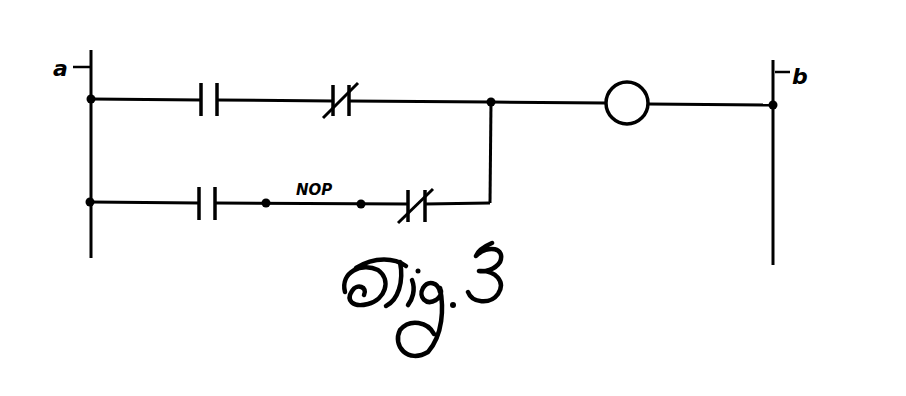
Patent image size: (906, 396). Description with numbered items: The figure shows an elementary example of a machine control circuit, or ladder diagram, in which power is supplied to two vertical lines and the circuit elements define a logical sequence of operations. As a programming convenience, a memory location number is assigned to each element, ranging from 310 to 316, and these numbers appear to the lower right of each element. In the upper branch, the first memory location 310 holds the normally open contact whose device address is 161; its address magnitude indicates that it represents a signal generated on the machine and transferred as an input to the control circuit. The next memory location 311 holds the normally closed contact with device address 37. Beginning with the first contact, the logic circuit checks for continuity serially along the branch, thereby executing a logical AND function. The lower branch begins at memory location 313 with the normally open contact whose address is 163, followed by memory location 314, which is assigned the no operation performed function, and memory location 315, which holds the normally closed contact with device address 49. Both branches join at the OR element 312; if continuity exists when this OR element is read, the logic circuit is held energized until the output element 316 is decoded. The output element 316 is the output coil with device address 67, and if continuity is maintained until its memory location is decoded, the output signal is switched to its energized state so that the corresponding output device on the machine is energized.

The contact 161 is at (215, 87).
The memory location 310 is at (177, 113).
The device address 37 is at (340, 88).
The memory location 311 is at (305, 115).
The OR element 312 is at (477, 151).
The output coil 67 is at (627, 91).
The output element 316 is at (710, 119).
The contact 163 is at (217, 192).
The memory location 313 is at (177, 217).
The memory location 314 is at (311, 217).
The device address 49 is at (415, 195).
The memory location 315 is at (457, 219).